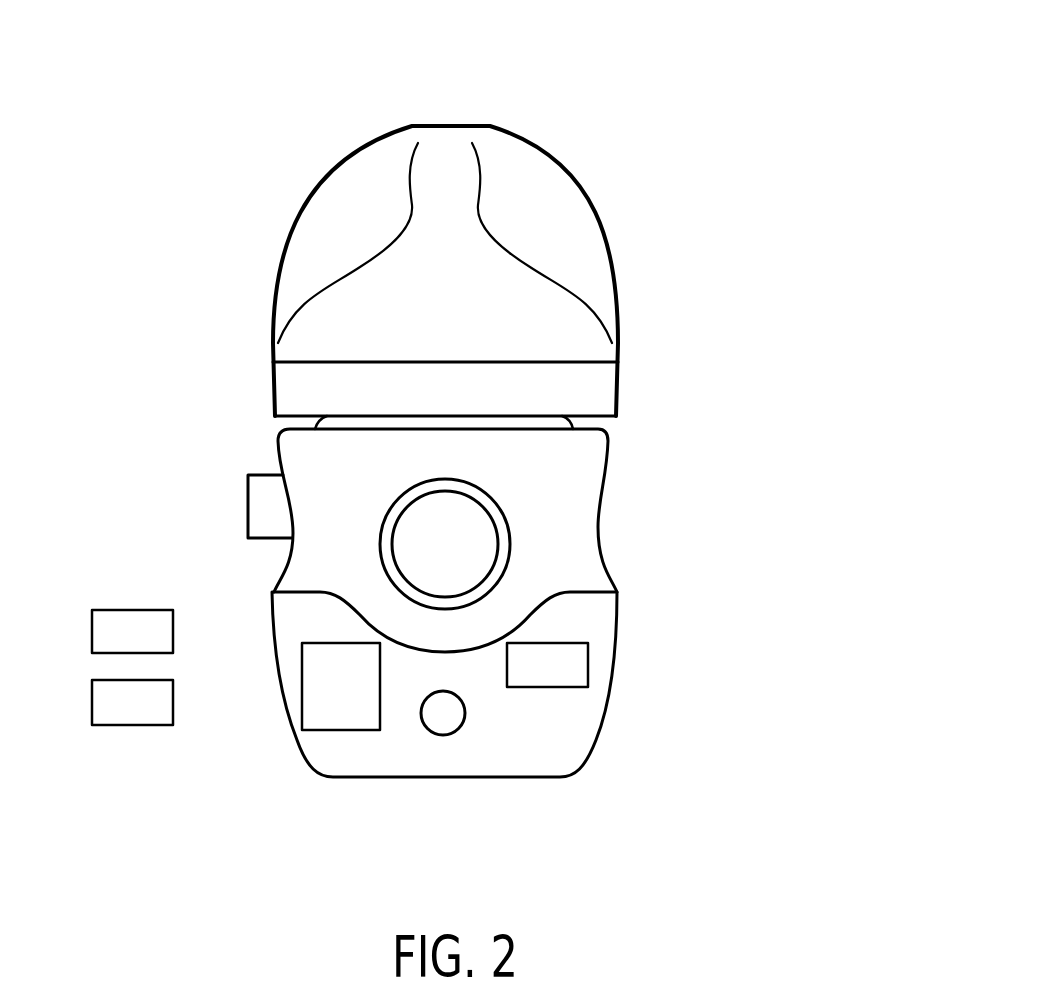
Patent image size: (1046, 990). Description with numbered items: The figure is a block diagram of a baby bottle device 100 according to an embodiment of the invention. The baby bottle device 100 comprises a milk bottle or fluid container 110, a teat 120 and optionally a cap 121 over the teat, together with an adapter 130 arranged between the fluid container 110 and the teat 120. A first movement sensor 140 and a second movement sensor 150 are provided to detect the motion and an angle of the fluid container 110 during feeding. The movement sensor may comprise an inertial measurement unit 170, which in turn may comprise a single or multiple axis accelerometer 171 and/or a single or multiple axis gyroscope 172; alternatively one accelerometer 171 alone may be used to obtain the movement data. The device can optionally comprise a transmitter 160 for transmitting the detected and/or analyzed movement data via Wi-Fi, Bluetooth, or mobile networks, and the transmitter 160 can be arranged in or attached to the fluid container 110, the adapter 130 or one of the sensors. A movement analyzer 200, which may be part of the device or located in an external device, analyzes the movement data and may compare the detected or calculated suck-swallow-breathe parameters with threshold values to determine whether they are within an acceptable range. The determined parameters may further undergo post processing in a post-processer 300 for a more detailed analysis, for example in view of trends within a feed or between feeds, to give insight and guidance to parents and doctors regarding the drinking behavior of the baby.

The baby bottle device 100 is at (646, 80).
The fluid container 110 is at (585, 515).
The teat 120 is at (357, 270).
The cap 121 is at (588, 210).
The adapter 130 is at (285, 389).
The first movement sensor 140 is at (230, 502).
The second movement sensor 150 is at (593, 722).
The transmitter 160 is at (570, 682).
The inertial measurement unit 170 is at (373, 730).
The accelerometer 171 is at (364, 679).
The gyroscope 172 is at (364, 724).
The movement analyzer 200 is at (153, 646).
The post-processer 300 is at (153, 717).